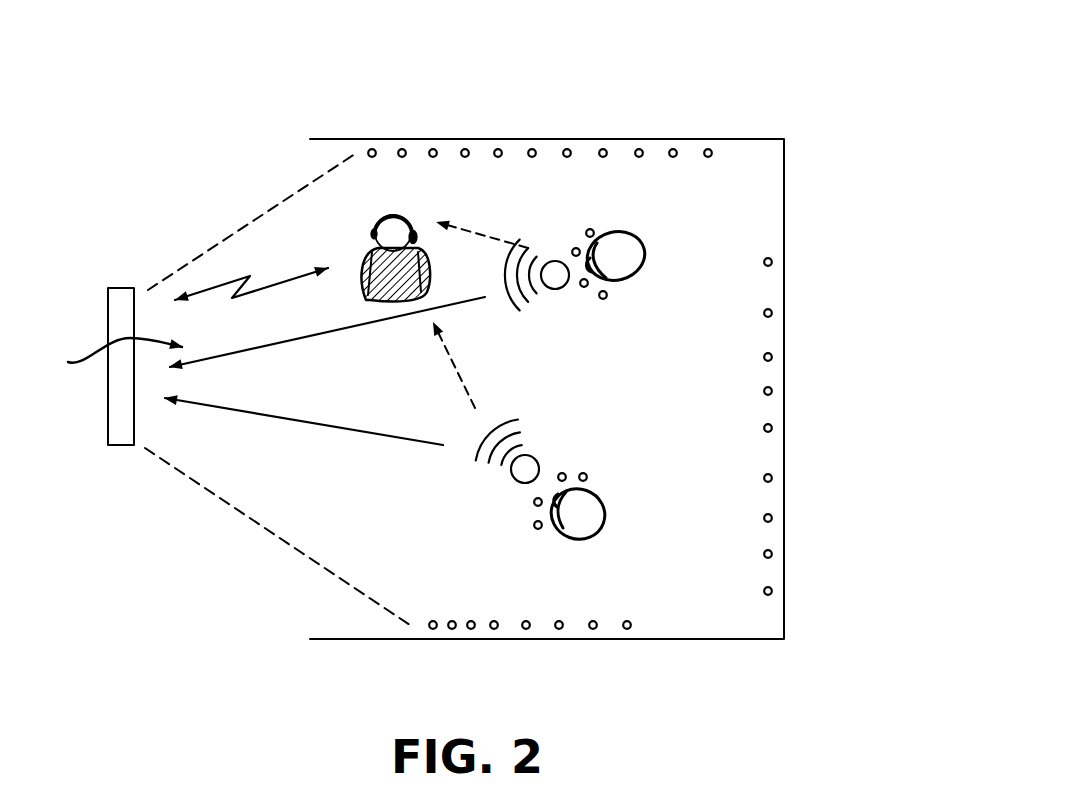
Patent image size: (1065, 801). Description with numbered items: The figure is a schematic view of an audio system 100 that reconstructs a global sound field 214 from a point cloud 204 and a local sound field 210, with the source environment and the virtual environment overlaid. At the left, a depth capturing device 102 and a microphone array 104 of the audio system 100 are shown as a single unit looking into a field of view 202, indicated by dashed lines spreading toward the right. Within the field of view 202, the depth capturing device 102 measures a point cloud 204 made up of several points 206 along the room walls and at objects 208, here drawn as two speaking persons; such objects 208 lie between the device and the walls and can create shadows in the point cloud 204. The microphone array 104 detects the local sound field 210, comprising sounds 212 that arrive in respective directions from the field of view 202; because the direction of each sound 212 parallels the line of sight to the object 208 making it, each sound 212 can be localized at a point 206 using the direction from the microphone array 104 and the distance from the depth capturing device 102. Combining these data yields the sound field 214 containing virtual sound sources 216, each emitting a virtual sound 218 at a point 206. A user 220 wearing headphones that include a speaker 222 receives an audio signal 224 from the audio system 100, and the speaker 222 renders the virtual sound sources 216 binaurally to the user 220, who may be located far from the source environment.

The audio system 100 is at (88, 298).
The depth capturing device 102 is at (88, 298).
The microphone array 104 is at (120, 288).
The field of view 202 is at (200, 247).
The point cloud 204 is at (335, 682).
The points 206 is at (584, 287).
The object 208 is at (645, 247).
The local sound field 210 is at (94, 317).
The sound 212 is at (365, 323).
The global sound field 214 is at (635, 366).
The virtual sound source 216 is at (693, 670).
The virtual sound 218 is at (455, 368).
The user 220 is at (377, 176).
The speaker 222 is at (372, 232).
The audio signal 224 is at (280, 280).